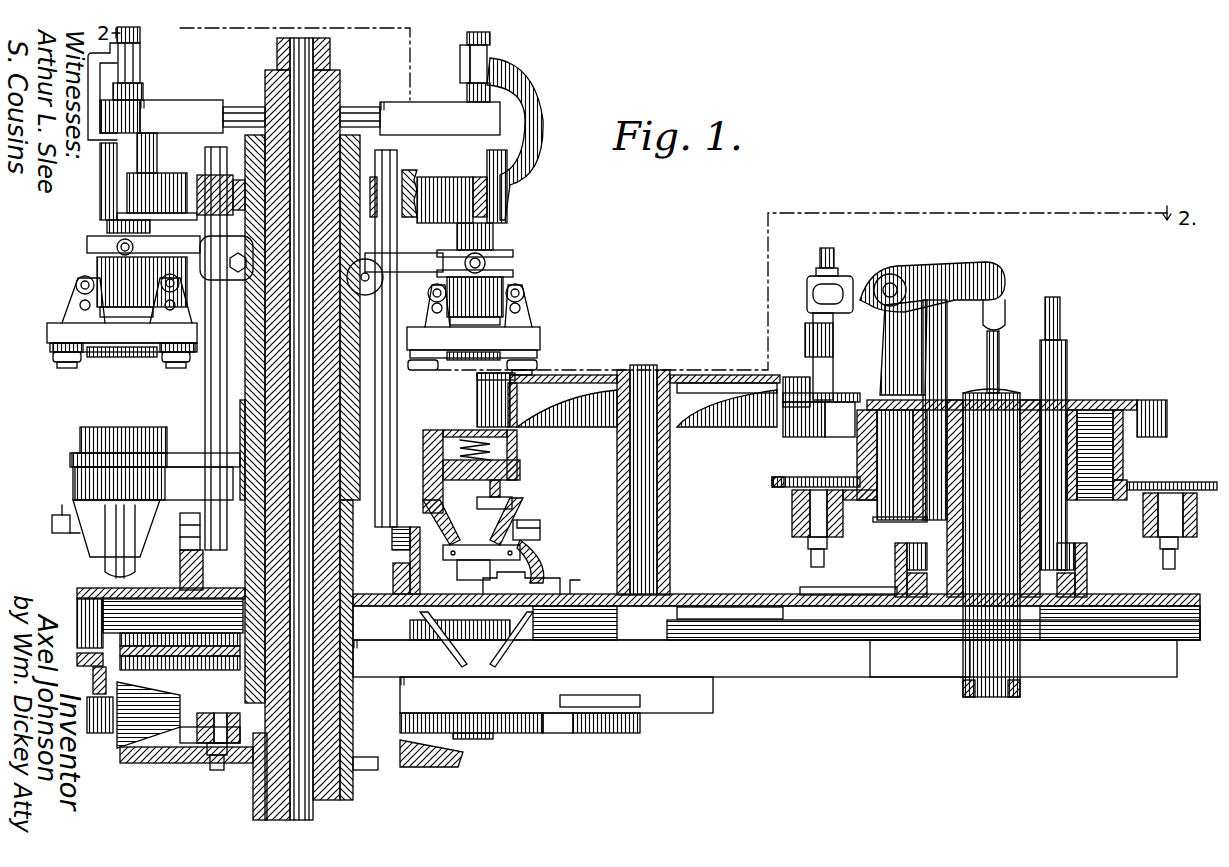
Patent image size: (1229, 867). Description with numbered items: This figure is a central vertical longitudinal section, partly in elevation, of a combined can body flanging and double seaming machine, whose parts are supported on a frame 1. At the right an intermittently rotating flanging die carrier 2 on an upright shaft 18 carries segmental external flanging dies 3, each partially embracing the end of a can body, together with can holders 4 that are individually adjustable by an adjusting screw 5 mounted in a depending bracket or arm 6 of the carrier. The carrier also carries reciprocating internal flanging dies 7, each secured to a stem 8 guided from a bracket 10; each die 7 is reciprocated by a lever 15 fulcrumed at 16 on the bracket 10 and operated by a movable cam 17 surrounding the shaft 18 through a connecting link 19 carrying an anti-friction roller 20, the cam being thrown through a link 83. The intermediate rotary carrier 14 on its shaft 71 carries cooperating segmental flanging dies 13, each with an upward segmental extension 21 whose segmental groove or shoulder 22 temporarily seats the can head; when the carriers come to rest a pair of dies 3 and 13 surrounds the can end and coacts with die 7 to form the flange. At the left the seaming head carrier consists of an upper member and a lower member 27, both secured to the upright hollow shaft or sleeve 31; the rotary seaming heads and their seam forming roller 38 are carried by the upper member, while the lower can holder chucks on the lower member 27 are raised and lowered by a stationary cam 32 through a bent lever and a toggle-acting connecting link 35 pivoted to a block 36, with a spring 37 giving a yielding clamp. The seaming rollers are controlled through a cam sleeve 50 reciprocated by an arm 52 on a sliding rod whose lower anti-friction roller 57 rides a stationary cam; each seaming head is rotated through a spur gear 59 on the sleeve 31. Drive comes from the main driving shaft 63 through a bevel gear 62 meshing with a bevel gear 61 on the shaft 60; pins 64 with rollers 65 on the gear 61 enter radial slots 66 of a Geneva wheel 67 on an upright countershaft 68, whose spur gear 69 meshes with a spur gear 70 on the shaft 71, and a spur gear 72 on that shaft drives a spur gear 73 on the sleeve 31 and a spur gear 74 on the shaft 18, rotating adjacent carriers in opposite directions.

The frame 1 is at (748, 600).
The intermittently rotating carrier 2 is at (1090, 402).
The segmental external flanging die 3 is at (838, 425).
The can holder 4 is at (799, 478).
The adjusting screw 5 is at (808, 550).
The depending bracket or arm 6 is at (793, 522).
The reciprocating internal flanging die 7 is at (843, 395).
The stem 8 is at (827, 250).
The bracket 10 is at (853, 280).
The segmental external flanging die 13 is at (477, 382).
The intermediate rotary carrier 14 is at (720, 376).
The lever 15 is at (935, 275).
The fulcrum 16 is at (890, 274).
The movable cam 17 is at (1078, 587).
The upright shaft 18 is at (970, 395).
The connecting link 19 is at (1005, 303).
The anti-friction roller 20 is at (896, 557).
The upward segmental extension 21 is at (727, 405).
The segmental groove or shoulder 22 is at (793, 378).
The lower carrier member 27 is at (155, 476).
The upright hollow shaft or sleeve 31 is at (257, 372).
The stationary cam 32 is at (545, 553).
The toggle-acting connecting link 35 is at (500, 490).
The block 36 is at (505, 462).
The spring 37 is at (463, 442).
The seam forming roller 38 is at (55, 362).
The cam sleeve 50 is at (515, 276).
The arm 52 is at (418, 256).
The anti-friction roller 57 is at (180, 540).
The spur gear 59 is at (190, 102).
The shaft 60 is at (312, 118).
The bevel gear 61 is at (427, 765).
The bevel gear 62 is at (180, 705).
The main driving shaft 63 is at (103, 737).
The pin 64 is at (218, 768).
The roller 65 is at (207, 727).
The radial slot 66 is at (560, 735).
The wheel 67 is at (615, 735).
The upright countershaft 68 is at (483, 738).
The spur gear 69 is at (600, 708).
The spur gear 70 is at (707, 693).
The shaft 71 is at (670, 550).
The spur gear 72 is at (780, 677).
The spur gear 73 is at (218, 592).
The spur gear 74 is at (910, 680).
The link 83 is at (712, 615).